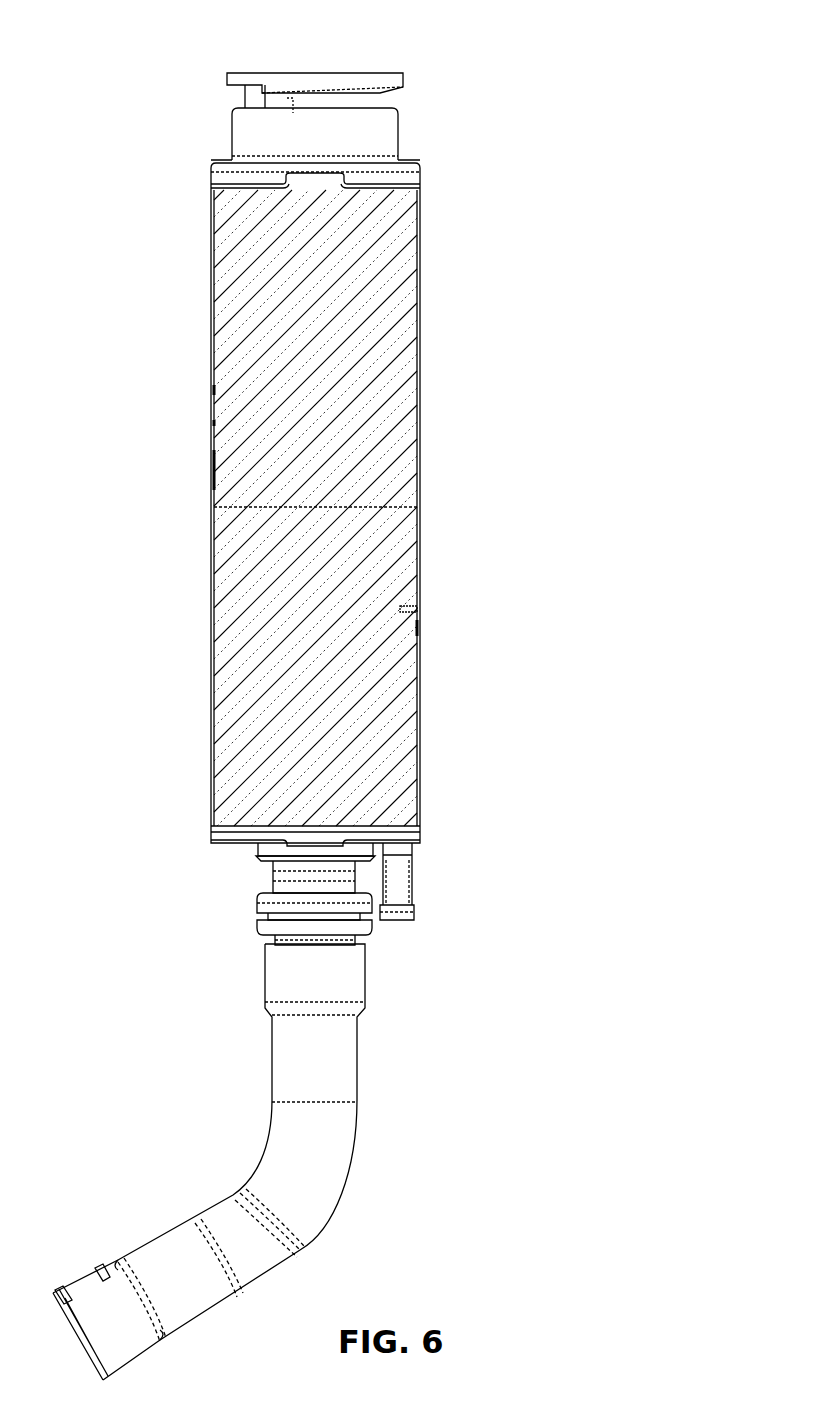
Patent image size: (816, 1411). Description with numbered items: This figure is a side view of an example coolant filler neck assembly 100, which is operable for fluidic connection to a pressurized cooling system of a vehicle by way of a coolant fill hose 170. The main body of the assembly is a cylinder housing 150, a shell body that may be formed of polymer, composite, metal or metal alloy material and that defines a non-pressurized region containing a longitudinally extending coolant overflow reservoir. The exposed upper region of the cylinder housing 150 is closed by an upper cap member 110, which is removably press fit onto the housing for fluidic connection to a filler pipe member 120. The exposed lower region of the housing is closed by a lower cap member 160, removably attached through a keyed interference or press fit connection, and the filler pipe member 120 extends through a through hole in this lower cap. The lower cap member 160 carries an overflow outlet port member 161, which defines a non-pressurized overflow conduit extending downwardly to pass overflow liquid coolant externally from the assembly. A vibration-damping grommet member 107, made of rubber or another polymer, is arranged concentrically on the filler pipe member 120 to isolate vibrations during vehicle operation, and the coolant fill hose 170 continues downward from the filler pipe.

The coolant filler neck assembly 100 is at (92, 62).
The upper cap member 110 is at (403, 87).
The cylinder housing 150 is at (225, 248).
The filler pipe member 120 is at (278, 875).
The vibration-damping grommet member 107 is at (371, 935).
The lower cap member 160 is at (418, 837).
The overflow outlet port member 161 is at (408, 895).
The coolant fill hose 170 is at (352, 1047).